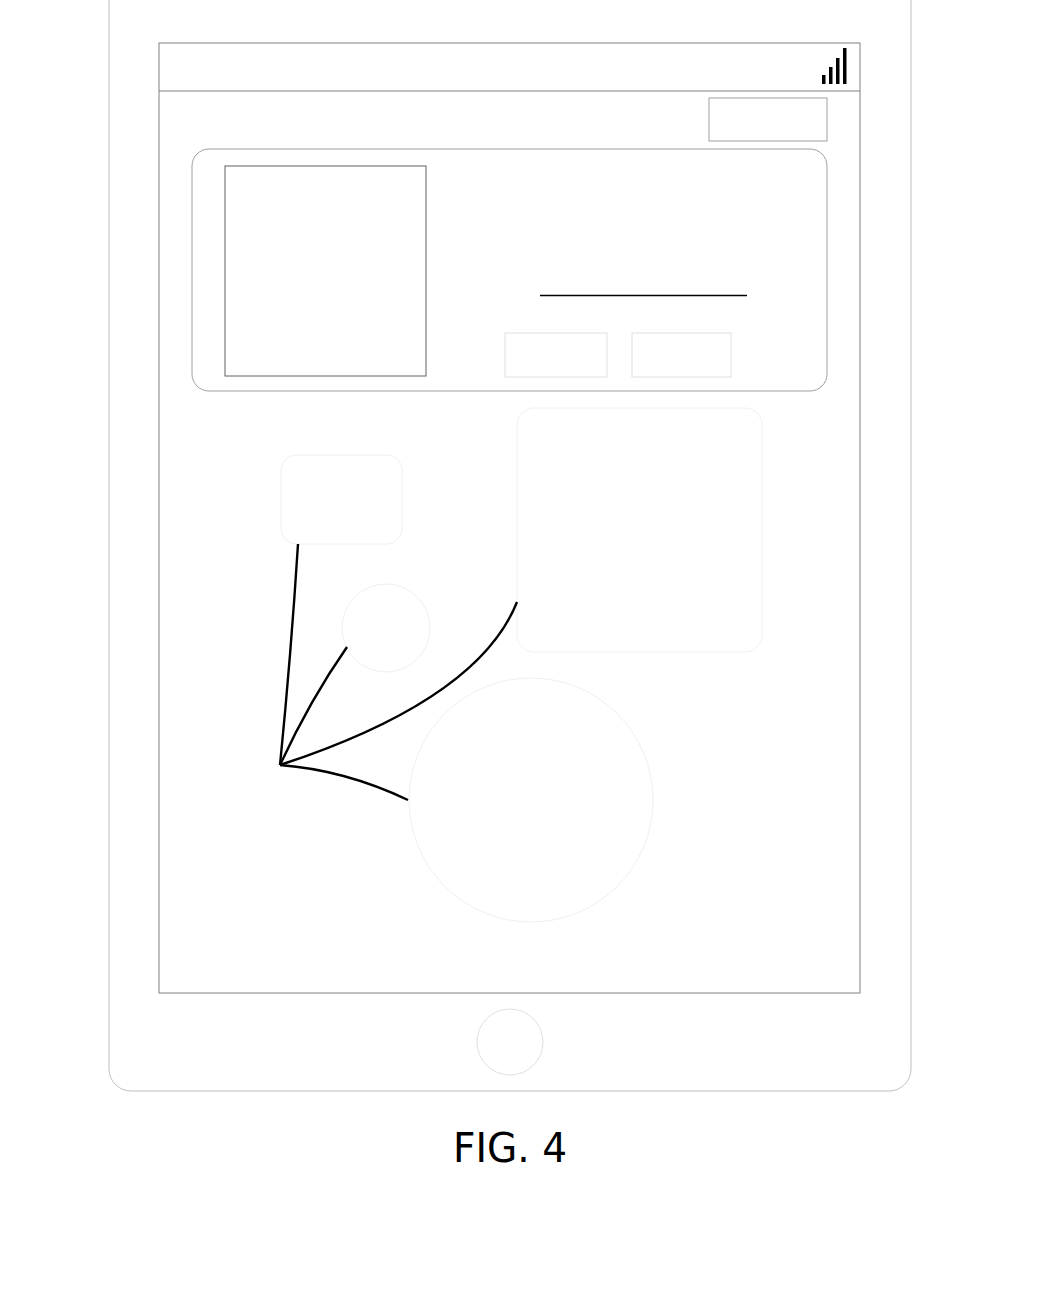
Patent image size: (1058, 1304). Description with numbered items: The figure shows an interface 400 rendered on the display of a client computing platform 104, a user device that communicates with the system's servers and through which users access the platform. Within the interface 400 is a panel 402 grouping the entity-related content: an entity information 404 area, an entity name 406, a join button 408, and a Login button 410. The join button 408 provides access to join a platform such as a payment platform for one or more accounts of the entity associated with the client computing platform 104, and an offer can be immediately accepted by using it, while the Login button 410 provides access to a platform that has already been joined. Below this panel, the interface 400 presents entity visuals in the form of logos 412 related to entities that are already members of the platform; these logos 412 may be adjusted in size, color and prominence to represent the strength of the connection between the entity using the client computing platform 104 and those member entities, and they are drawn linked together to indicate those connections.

The client computing platform 104 is at (92, 51).
The interface 400 is at (860, 149).
The business entity panel 402 is at (186, 177).
The entity information 404 is at (385, 200).
The entity name 406 is at (664, 270).
The join button 408 is at (548, 330).
The Login button 410 is at (681, 330).
The logos 412 is at (388, 678).